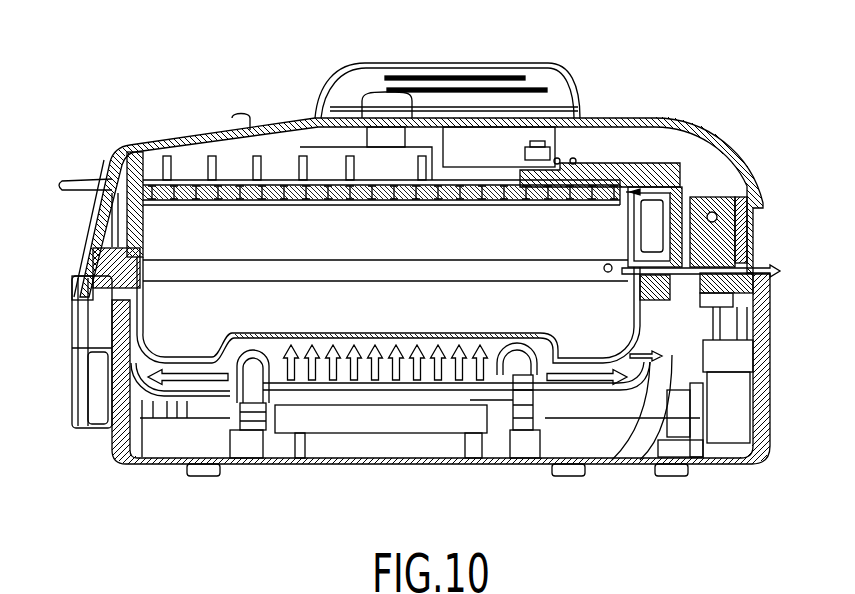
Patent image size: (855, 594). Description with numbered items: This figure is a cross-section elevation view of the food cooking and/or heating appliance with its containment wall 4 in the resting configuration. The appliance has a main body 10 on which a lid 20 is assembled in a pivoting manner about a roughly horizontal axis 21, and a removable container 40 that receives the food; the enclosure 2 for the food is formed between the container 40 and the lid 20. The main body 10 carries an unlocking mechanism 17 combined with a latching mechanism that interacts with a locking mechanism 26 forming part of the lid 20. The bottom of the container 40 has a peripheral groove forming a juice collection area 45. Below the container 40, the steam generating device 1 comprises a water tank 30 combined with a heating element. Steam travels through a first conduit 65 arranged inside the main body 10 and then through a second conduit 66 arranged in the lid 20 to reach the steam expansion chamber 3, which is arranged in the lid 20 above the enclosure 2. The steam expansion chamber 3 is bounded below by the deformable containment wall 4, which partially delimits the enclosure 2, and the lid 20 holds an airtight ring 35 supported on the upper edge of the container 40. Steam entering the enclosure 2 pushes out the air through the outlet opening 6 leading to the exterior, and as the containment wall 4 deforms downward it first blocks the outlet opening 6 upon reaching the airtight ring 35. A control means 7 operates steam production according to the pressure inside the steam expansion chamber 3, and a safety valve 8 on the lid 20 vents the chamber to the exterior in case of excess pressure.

The steam generating device 1 is at (406, 383).
The enclosure 2 is at (352, 288).
The steam expansion chamber 3 is at (270, 184).
The containment wall 4 is at (110, 173).
The outlet opening 6 is at (609, 262).
The control means 7 is at (533, 150).
The safety valve 8 is at (389, 135).
The main body 10 is at (731, 475).
The unlocking mechanism 17 is at (86, 318).
The lid 20 is at (722, 107).
The horizontal axis 21 is at (713, 213).
The locking mechanism 26 is at (72, 277).
The water tank 30 is at (346, 403).
The airtight ring 35 is at (93, 247).
The container 40 is at (104, 400).
The juice collection area 45 is at (193, 340).
The first conduit 65 is at (648, 380).
The second conduit 66 is at (650, 190).